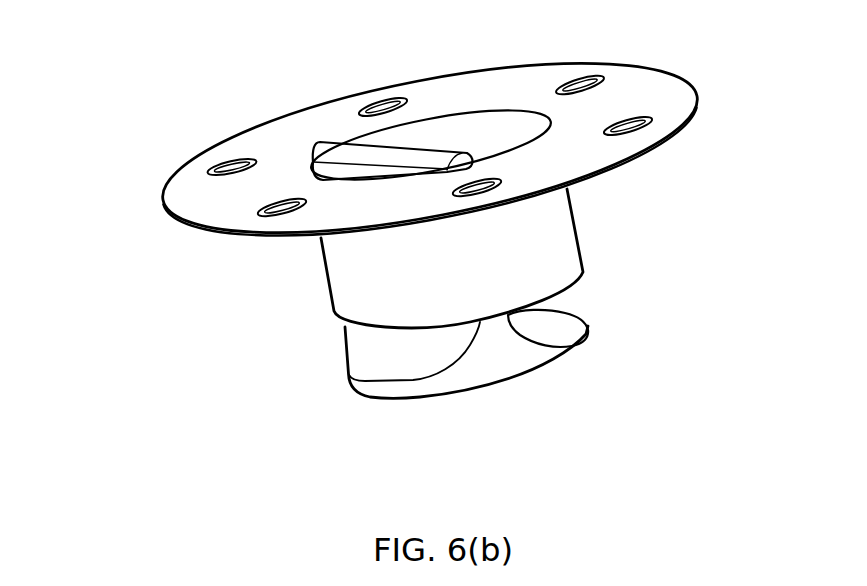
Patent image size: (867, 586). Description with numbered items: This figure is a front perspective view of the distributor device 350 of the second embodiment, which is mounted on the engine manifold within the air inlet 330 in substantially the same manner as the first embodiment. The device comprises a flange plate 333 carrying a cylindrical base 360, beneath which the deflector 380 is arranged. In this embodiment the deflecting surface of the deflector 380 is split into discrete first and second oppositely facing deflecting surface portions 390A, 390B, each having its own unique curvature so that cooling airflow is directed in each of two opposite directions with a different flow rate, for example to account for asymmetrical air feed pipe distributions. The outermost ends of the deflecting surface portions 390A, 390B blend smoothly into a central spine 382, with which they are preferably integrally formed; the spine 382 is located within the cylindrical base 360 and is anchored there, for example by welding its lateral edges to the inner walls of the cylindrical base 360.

The distributor device 350 is at (397, 229).
The flange plate 333 is at (683, 97).
The air inlet 330 is at (473, 132).
The central spine 382 is at (333, 150).
The cylindrical base 360 is at (553, 250).
The deflector 380 is at (523, 365).
The first deflecting surface portion 390A is at (393, 370).
The second deflecting surface portion 390B is at (557, 330).